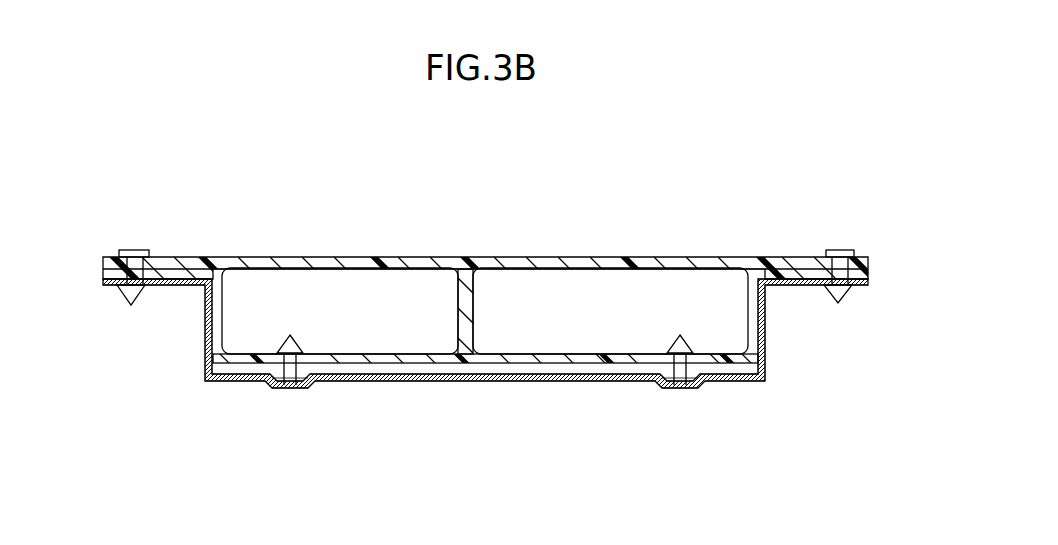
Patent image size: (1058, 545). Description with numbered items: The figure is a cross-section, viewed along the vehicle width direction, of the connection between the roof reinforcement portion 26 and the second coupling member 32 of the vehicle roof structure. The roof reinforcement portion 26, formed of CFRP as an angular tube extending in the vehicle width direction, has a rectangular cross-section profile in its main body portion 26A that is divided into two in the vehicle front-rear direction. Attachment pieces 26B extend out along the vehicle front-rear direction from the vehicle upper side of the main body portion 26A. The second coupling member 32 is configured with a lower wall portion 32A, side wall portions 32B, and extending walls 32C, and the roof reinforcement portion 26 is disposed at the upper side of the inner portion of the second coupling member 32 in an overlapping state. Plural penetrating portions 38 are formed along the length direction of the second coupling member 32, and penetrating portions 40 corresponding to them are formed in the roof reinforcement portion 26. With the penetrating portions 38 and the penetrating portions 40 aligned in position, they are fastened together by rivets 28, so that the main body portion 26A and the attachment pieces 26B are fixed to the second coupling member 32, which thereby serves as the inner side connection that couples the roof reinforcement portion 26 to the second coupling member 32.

The roof reinforcement portion 26 is at (485, 202).
The main body portion 26A is at (318, 257).
The attachment pieces 26B is at (103, 257).
The rivets 28 is at (300, 340).
The second coupling member 32 is at (492, 396).
The lower wall portion 32A is at (398, 383).
The side wall portions 32B is at (206, 355).
The extending walls 32C is at (106, 287).
The penetrating portions 38 is at (132, 304).
The penetrating portions 40 is at (136, 251).